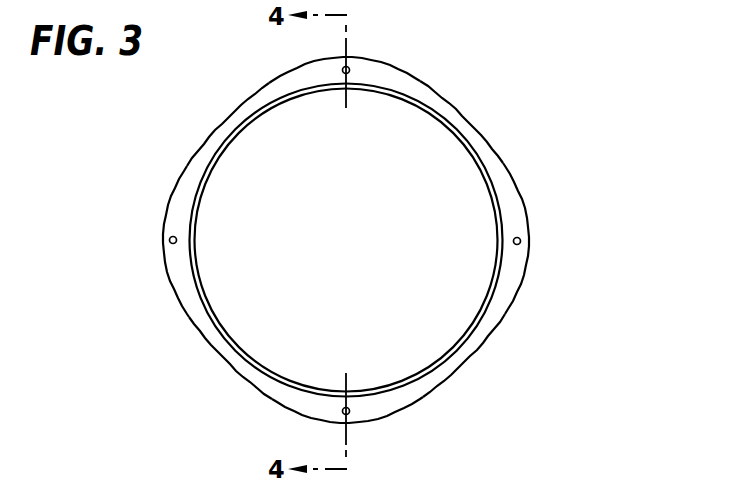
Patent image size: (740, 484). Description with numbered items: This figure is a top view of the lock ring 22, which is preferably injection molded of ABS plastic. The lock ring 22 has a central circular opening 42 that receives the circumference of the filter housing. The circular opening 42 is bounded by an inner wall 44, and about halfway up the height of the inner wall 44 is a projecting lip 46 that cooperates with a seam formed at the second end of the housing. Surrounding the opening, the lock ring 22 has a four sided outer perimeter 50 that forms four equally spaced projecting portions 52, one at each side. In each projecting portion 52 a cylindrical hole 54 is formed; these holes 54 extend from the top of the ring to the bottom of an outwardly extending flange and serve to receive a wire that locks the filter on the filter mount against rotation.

The lock ring 22 is at (673, 278).
The circular opening 42 is at (387, 388).
The inner wall 44 is at (233, 353).
The projecting lip 46 is at (275, 378).
The four sided outer perimeter 50 is at (333, 260).
The projecting portion 52 is at (353, 77).
The cylindrical hole 54 is at (350, 68).